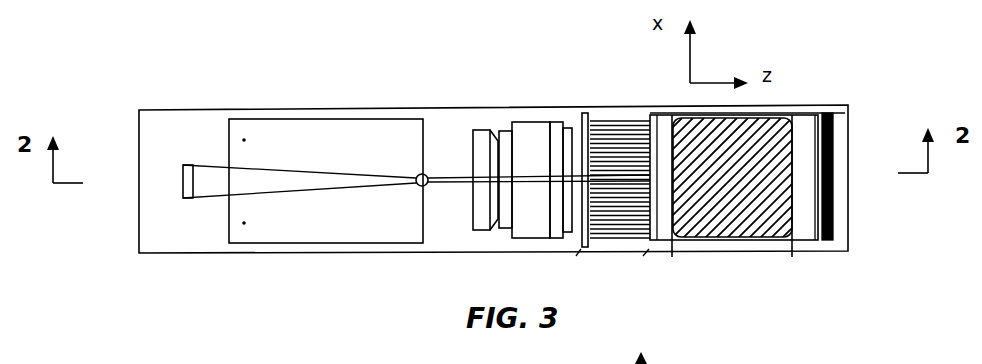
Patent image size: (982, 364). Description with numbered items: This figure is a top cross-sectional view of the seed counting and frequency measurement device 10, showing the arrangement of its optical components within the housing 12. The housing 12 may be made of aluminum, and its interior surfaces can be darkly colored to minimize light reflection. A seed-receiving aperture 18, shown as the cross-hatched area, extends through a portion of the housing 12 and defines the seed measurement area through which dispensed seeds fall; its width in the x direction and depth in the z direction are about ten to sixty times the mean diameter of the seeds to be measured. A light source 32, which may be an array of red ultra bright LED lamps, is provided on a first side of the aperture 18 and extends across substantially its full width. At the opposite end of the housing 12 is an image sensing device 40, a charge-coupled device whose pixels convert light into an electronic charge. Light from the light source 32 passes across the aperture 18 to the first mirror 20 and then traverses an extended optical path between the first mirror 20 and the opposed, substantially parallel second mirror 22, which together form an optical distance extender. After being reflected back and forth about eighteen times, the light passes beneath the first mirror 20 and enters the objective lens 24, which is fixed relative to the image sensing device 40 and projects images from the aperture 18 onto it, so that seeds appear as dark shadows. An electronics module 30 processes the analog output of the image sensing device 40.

The seed counting and frequency measurement device 10 is at (104, 86).
The housing 12 is at (138, 213).
The seed-receiving aperture 18 is at (762, 137).
The first mirror 20 is at (583, 118).
The second mirror 22 is at (651, 241).
The objective lens 24 is at (483, 142).
The electronics module 30 is at (307, 137).
The light source 32 is at (837, 238).
The image sensing device 40 is at (188, 197).